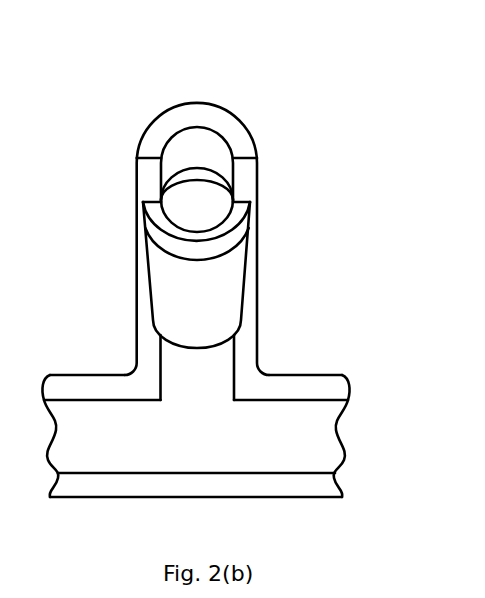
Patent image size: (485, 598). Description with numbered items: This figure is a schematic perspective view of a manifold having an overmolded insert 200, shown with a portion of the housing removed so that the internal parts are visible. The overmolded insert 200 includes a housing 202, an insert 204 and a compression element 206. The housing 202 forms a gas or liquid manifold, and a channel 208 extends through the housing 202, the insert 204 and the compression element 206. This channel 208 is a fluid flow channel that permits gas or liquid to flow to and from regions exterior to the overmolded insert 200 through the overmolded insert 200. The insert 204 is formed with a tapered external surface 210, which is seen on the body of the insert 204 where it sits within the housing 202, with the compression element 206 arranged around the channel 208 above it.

The overmolded insert 200 is at (207, 63).
The housing 202 is at (70, 383).
The insert 204 is at (250, 303).
The compression element 206 is at (218, 251).
The channel 208 is at (198, 147).
The tapered external surface 210 is at (173, 288).